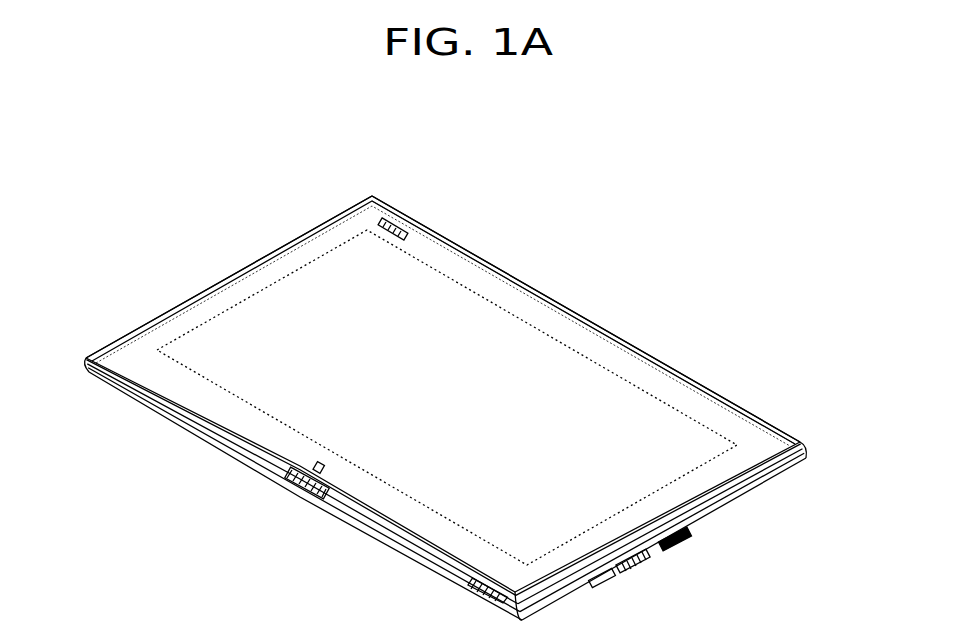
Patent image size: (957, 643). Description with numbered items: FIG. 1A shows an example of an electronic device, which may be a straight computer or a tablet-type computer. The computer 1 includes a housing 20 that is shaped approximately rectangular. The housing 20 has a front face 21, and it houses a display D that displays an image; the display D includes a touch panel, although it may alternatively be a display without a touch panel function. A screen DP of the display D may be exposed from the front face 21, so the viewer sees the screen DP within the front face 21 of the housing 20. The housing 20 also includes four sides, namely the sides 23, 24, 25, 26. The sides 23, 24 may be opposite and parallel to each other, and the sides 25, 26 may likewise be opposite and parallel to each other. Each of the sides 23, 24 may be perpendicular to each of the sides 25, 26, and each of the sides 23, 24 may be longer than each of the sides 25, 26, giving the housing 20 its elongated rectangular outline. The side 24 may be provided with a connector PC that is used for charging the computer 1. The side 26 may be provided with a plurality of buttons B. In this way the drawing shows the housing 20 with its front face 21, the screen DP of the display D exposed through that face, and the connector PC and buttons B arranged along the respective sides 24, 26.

The computer 1 is at (447, 392).
The housing 20 is at (727, 391).
The front face 21 is at (138, 353).
The side 23 is at (466, 250).
The side 24 is at (425, 560).
The side 25 is at (300, 228).
The side 26 is at (720, 497).
The display D is at (476, 383).
The screen DP is at (548, 365).
The buttons B is at (600, 577).
The connector PC is at (303, 497).